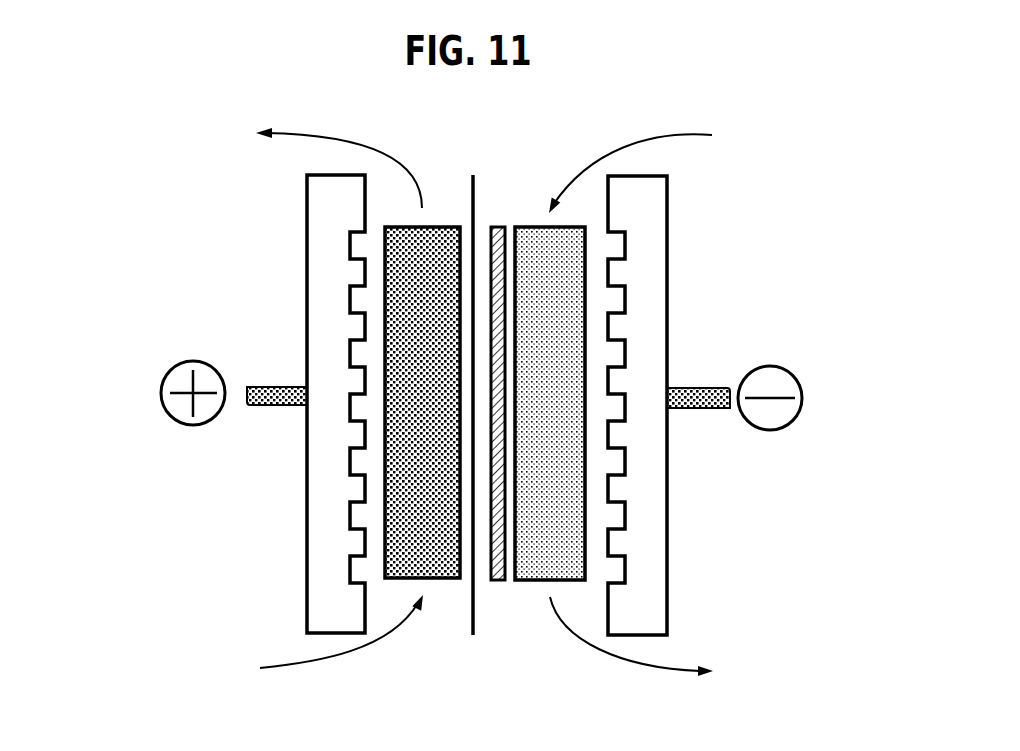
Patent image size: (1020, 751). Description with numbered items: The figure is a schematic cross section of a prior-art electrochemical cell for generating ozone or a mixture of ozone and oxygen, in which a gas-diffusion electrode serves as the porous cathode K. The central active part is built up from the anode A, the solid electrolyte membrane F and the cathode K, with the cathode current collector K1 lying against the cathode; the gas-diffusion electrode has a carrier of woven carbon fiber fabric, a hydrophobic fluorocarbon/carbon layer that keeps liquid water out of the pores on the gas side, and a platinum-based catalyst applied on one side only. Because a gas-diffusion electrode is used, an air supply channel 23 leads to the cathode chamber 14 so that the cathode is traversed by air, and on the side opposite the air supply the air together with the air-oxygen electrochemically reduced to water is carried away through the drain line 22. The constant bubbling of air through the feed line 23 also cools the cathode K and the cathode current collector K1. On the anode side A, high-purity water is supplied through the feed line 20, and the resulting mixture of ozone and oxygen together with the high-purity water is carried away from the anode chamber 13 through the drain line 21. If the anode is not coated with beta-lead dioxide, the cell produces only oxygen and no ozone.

The anode chamber 13 is at (375, 238).
The cathode chamber 14 is at (600, 513).
The feed line 20 is at (340, 668).
The drain line 21 is at (340, 135).
The drain line 22 is at (630, 670).
The air supply channel 23 is at (625, 140).
The anode A is at (385, 522).
The solid electrolyte membrane F is at (473, 603).
The cathode K is at (503, 321).
The cathode current collector K1 is at (568, 263).